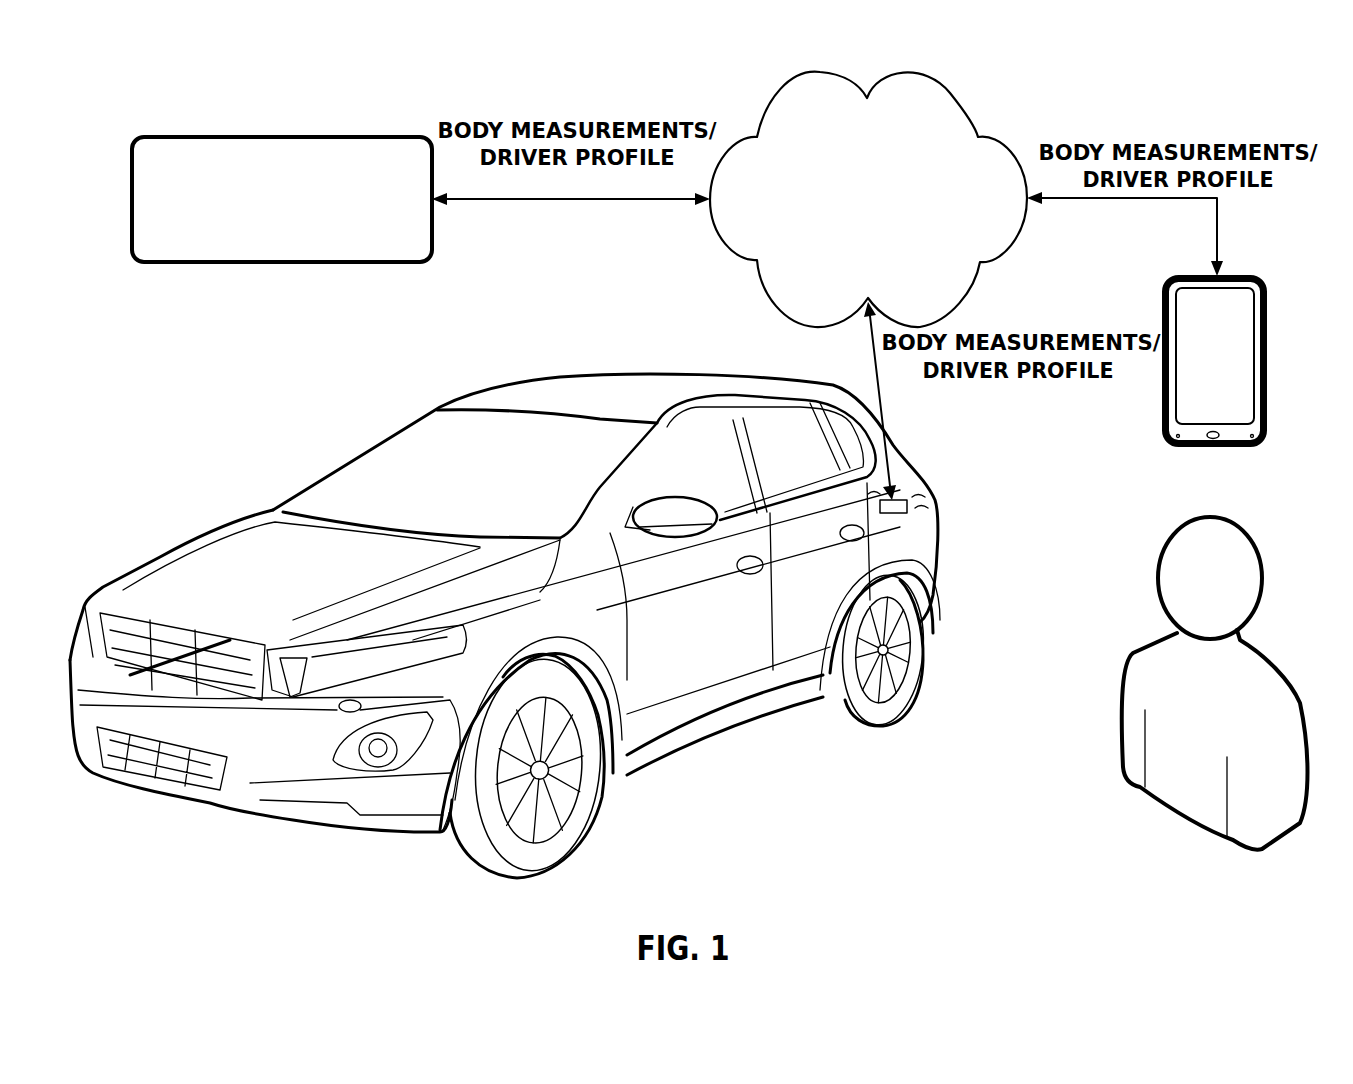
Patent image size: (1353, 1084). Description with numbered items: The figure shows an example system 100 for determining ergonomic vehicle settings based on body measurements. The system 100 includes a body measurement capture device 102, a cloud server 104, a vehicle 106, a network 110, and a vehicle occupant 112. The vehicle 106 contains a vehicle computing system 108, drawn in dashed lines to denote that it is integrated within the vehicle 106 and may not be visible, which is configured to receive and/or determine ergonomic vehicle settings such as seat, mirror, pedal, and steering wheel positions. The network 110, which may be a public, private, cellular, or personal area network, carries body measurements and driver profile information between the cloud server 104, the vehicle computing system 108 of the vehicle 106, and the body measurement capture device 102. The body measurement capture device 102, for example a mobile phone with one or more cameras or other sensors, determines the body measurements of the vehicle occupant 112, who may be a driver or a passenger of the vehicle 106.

The system 100 is at (1262, 80).
The body measurement capture device 102 is at (1253, 278).
The cloud server 104 is at (262, 225).
The vehicle 106 is at (630, 375).
The vehicle computing system 108 is at (934, 483).
The network 110 is at (849, 227).
The vehicle occupant 112 is at (1232, 517).